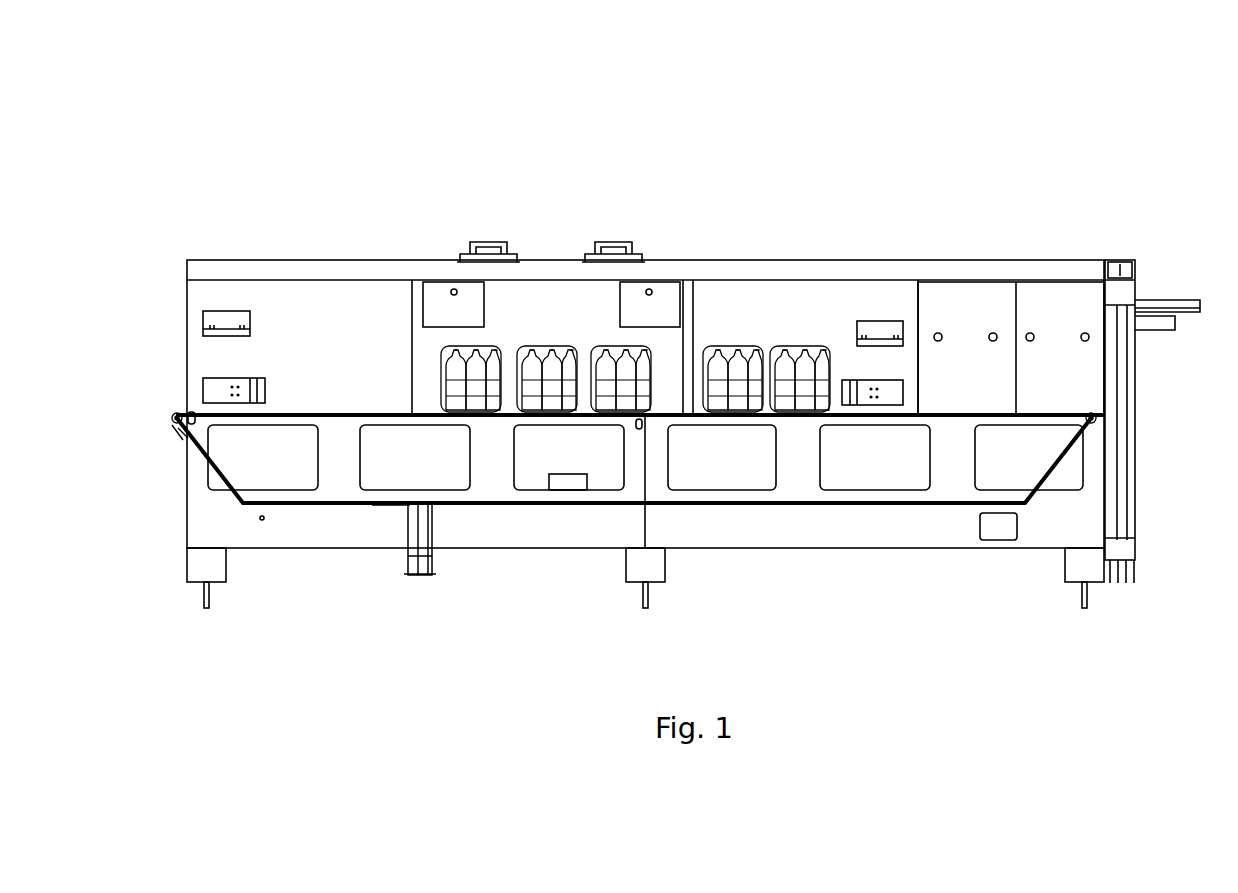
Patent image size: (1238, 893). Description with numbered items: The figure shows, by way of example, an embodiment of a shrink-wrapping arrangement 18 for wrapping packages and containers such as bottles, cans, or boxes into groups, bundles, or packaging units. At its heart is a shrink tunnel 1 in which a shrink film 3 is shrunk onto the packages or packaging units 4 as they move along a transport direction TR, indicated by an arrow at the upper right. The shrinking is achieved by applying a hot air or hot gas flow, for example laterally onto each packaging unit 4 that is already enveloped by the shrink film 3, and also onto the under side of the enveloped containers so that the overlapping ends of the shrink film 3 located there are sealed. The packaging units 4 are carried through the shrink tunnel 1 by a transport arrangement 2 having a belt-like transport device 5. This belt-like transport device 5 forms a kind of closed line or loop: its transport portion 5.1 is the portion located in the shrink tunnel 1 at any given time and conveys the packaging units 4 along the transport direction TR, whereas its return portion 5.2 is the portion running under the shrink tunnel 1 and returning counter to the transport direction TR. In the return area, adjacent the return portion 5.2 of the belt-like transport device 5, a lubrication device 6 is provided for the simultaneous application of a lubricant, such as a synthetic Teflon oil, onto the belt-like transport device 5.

The shrink tunnel 1 is at (306, 354).
The transport arrangement 2 is at (175, 400).
The shrink film 3 is at (459, 350).
The packaging unit 4 is at (486, 344).
The belt-like transport device 5 is at (606, 414).
The transport portion 5.1 is at (341, 405).
The return portion 5.2 is at (815, 515).
The lubrication device 6 is at (400, 527).
The shrink-wrapping arrangement 18 is at (335, 132).
The transport direction TR is at (998, 237).